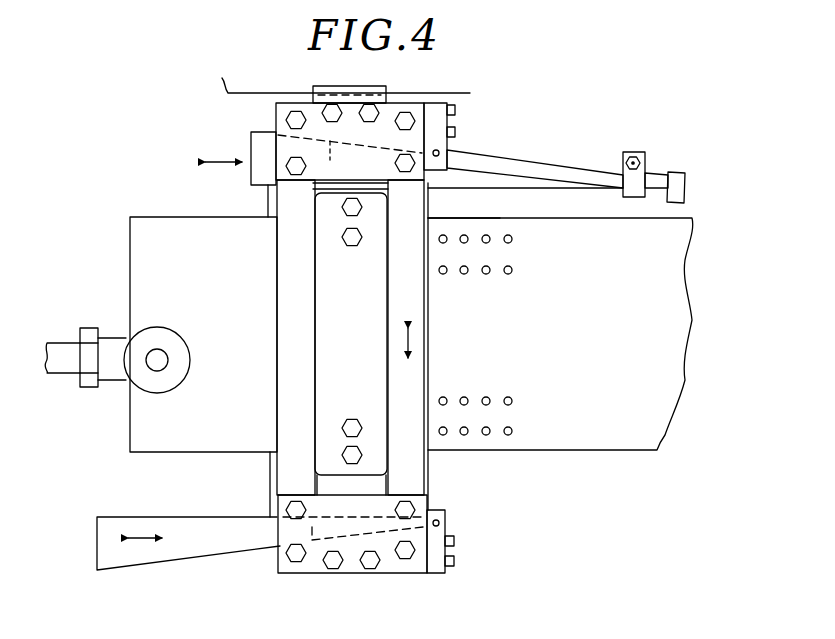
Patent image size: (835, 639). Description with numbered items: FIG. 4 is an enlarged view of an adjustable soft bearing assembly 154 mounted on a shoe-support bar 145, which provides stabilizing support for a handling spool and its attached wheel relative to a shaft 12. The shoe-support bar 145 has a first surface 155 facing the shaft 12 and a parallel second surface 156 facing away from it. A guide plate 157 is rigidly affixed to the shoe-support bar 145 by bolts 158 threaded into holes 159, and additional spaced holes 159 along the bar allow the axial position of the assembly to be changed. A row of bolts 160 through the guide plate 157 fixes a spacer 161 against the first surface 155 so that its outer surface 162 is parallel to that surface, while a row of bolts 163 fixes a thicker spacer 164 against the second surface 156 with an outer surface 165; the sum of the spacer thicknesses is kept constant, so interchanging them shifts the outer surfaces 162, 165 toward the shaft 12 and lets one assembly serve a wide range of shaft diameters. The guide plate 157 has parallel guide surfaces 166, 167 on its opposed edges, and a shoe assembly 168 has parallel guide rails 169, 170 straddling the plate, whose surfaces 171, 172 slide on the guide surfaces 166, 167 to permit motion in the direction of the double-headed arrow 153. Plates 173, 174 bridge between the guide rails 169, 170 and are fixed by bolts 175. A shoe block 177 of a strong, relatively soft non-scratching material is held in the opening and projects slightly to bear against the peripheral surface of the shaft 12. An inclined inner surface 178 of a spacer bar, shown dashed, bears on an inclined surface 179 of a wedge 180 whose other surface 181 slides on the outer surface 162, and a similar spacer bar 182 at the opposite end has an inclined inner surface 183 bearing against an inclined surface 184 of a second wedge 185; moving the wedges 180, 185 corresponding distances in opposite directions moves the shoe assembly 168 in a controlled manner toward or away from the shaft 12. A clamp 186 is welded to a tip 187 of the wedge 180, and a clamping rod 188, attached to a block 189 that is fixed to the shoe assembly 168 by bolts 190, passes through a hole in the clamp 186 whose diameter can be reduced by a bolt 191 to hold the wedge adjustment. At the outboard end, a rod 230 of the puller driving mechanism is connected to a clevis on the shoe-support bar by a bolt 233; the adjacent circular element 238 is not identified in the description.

The shaft 12 is at (466, 92).
The shoe-support bar 145 is at (618, 432).
The double-headed arrow 153 is at (424, 343).
The adjustable soft bearing assembly 154 is at (522, 130).
The first surface 155 is at (158, 217).
The second surface 156 is at (213, 453).
The guide plate 157 is at (330, 320).
The bolts 158 is at (342, 237).
The holes 159 is at (447, 275).
The bolts 160 is at (342, 207).
The spacer 161 is at (429, 207).
The outer surface 162 is at (268, 186).
The bolts 163 is at (362, 455).
The spacer 164 is at (431, 465).
The outer surface 165 is at (432, 510).
The guide surface 166 is at (317, 376).
The guide surface 167 is at (388, 345).
The shoe assembly 168 is at (272, 126).
The guide rail 169 is at (290, 378).
The guide rail 170 is at (413, 387).
The parallel surface 171 is at (315, 354).
The parallel surface 172 is at (408, 337).
The plate 173 is at (287, 146).
The plate 174 is at (392, 567).
The bolts 175 is at (401, 508).
The shoe block 177 is at (378, 87).
The inner surface 178 is at (329, 158).
The inclined surface 179 is at (276, 132).
The wedge 180 is at (510, 180).
The surface 181 is at (480, 190).
The spacer bar 182 is at (352, 563).
The inner surface 183 is at (354, 529).
The inclined surface 184 is at (243, 552).
The wedge 185 is at (205, 547).
The clamp 186 is at (633, 197).
The tip 187 is at (616, 187).
The clamping rod 188 is at (575, 155).
The block 189 is at (457, 130).
The bolts 190 is at (455, 110).
The bolt 191 is at (640, 160).
The rod 230 is at (68, 372).
The bolt 233 is at (161, 366).
The disk 238 is at (168, 327).